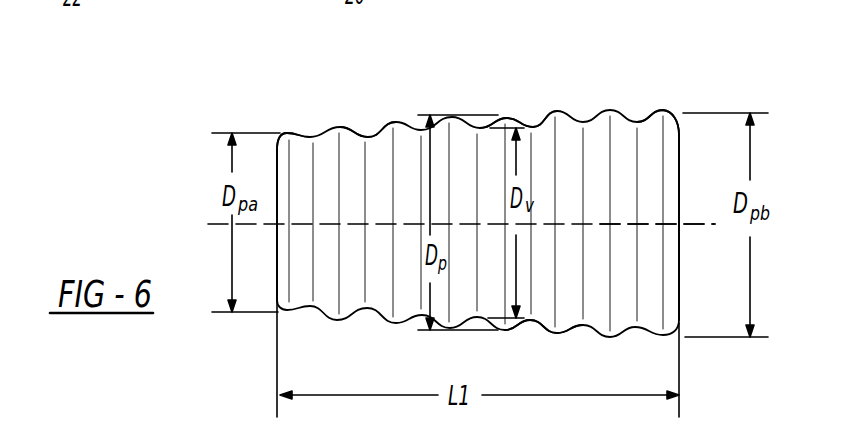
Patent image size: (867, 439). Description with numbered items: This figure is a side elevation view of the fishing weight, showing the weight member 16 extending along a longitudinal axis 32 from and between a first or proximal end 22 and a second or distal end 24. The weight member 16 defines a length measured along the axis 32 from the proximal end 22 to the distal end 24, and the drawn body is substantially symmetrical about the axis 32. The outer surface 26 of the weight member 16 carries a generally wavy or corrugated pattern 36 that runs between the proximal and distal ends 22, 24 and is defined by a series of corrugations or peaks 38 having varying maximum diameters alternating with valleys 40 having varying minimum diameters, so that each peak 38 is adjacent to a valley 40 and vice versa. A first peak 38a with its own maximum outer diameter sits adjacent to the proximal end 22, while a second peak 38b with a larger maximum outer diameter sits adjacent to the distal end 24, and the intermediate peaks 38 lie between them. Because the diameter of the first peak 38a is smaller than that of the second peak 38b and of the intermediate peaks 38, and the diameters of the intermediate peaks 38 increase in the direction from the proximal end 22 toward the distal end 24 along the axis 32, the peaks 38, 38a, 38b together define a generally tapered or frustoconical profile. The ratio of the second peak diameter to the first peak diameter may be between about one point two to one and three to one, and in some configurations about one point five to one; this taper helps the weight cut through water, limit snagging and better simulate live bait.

The weight member 16 is at (590, 82).
The proximal end 22 is at (277, 245).
The distal end 24 is at (680, 193).
The outer surface 26 is at (410, 235).
The longitudinal axis 32 is at (697, 224).
The corrugated pattern 36 is at (371, 124).
The peaks 38 is at (554, 113).
The first peak 38a is at (286, 130).
The second peak 38b is at (663, 112).
The valleys 40 is at (531, 321).